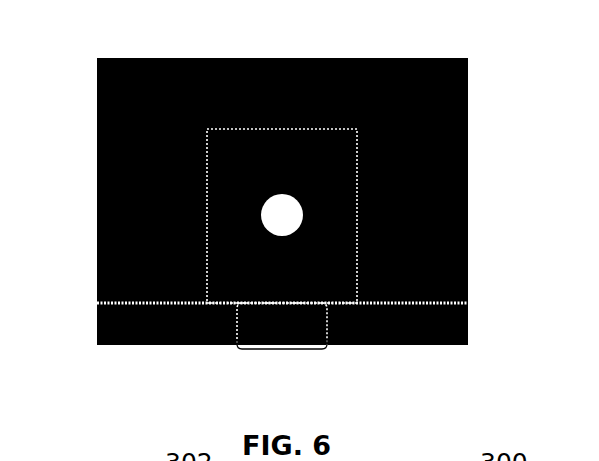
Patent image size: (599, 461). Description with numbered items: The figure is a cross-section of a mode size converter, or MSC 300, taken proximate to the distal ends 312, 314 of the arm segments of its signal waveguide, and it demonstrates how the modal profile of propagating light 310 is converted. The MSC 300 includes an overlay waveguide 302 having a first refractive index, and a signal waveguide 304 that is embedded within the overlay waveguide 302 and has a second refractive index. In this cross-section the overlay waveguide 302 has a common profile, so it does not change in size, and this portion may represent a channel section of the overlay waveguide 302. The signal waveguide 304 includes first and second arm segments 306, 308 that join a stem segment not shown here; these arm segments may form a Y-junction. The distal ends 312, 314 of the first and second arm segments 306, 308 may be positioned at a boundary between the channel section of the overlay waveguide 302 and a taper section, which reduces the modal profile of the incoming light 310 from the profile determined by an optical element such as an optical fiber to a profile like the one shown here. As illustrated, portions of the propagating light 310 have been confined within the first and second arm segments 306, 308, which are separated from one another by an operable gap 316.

The MSC 300 is at (329, 120).
The overlay waveguide 302 is at (231, 129).
The signal waveguide 304 is at (283, 350).
The first arm segment 306 is at (240, 301).
The second arm segment 308 is at (330, 302).
The propagating light 310 is at (313, 196).
The distal end of first arm segment 312 is at (238, 306).
The distal end of second arm segment 314 is at (330, 306).
The operable gap 316 is at (284, 297).